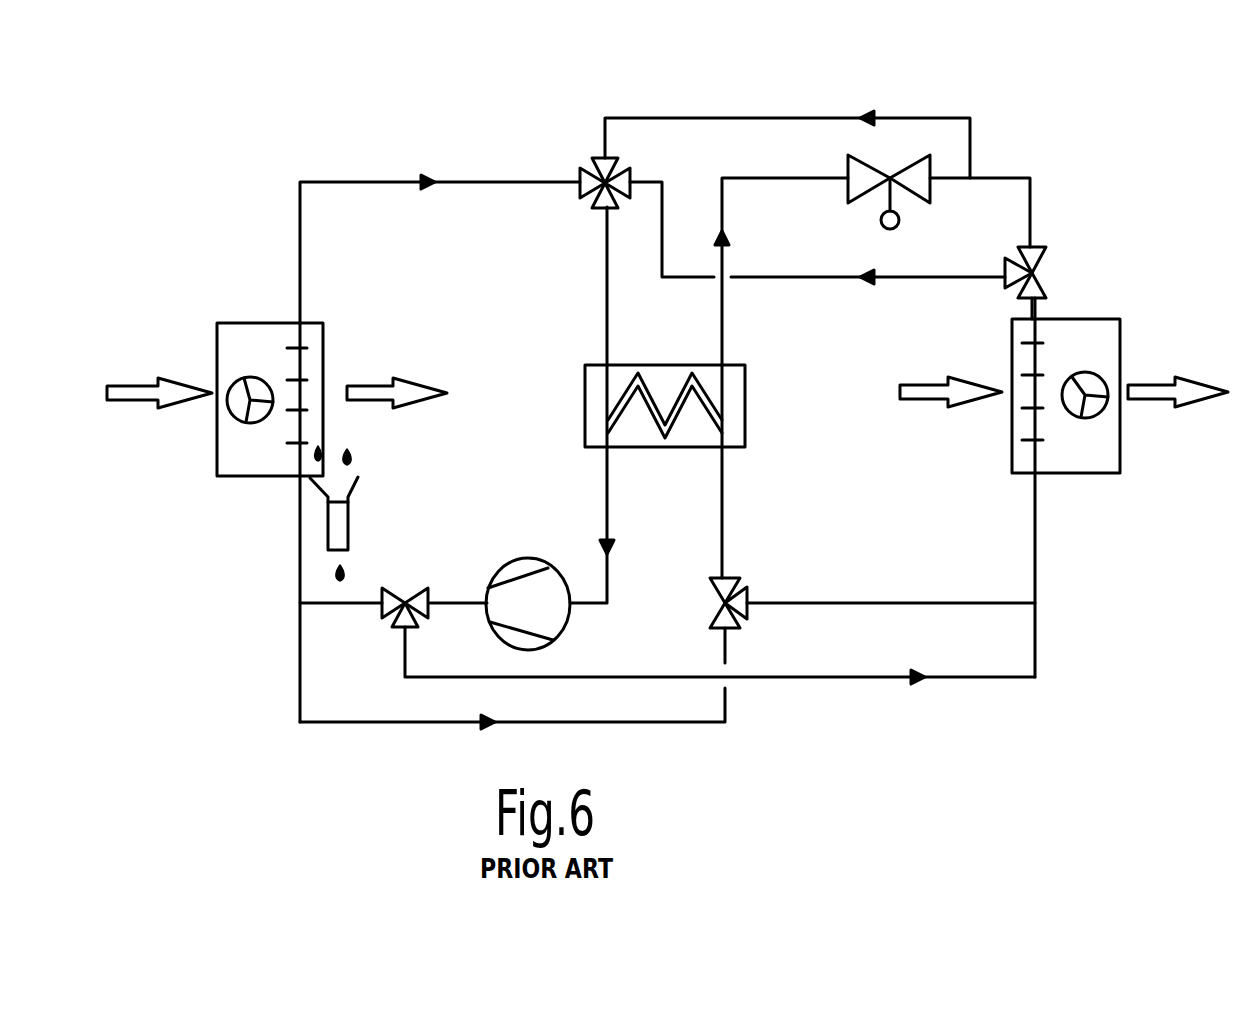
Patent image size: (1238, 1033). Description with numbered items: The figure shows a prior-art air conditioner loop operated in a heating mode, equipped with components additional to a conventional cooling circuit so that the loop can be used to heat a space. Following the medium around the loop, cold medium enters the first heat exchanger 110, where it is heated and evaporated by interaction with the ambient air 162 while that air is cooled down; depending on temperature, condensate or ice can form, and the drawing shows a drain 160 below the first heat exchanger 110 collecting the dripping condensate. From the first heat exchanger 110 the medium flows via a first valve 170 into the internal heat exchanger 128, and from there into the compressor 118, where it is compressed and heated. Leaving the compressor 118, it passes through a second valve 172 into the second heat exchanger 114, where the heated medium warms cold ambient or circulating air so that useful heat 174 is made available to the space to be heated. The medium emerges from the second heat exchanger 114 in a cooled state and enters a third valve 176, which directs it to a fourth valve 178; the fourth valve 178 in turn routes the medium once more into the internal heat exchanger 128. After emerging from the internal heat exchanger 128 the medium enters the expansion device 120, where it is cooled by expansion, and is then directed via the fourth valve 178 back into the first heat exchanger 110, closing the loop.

The first heat exchanger 110 is at (243, 330).
The second heat exchanger 114 is at (1092, 335).
The compressor 118 is at (522, 557).
The expansion device 120 is at (908, 157).
The internal heat exchanger 128 is at (748, 410).
The condensate drain 160 is at (355, 532).
The ambient air 162 is at (138, 403).
The first valve 170 is at (748, 615).
The second valve 172 is at (388, 626).
The useful heat 174 is at (1195, 408).
The third valve 176 is at (1043, 252).
The fourth valve 178 is at (585, 164).